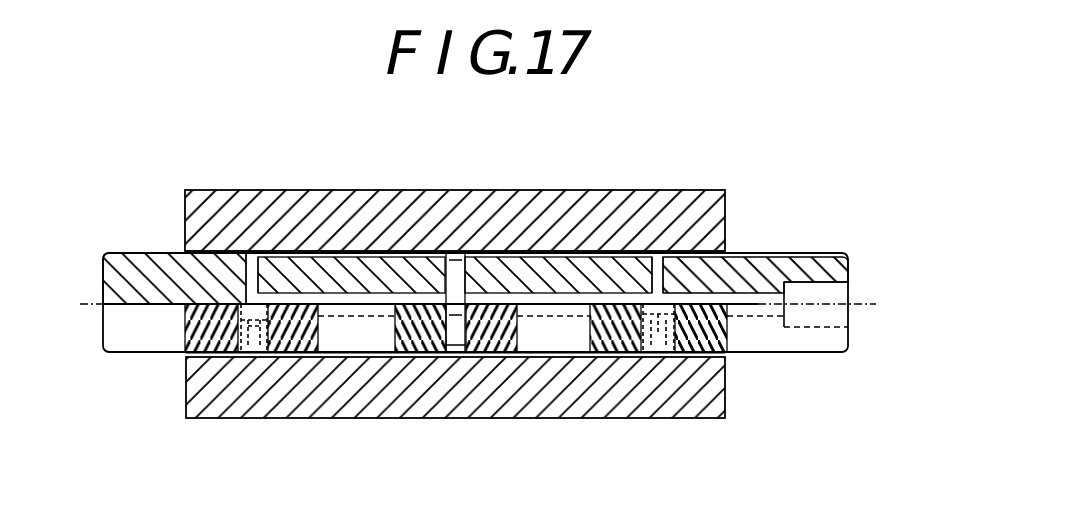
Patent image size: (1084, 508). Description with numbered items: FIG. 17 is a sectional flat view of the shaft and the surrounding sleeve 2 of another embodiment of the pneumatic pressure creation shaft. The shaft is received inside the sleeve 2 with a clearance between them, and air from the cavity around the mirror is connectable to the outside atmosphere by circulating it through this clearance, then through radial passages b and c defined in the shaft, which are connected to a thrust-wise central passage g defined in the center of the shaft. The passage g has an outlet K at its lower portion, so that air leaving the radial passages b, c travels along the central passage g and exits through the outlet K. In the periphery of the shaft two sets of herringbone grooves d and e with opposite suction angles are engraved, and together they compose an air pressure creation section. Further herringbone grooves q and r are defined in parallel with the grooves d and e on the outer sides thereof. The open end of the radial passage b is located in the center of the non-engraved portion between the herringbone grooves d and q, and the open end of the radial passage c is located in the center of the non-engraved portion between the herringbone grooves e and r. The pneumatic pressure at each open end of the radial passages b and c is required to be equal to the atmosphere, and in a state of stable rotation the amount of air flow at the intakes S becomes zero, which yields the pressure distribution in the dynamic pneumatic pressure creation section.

The sleeve 2 is at (413, 207).
The radial passage b is at (252, 263).
The radial passage c is at (657, 263).
The intake S is at (180, 247).
The thrust-wise central passage g is at (761, 304).
The outlet K is at (850, 322).
The herringbone groove q is at (213, 343).
The herringbone grooves d is at (493, 343).
The herringbone grooves e is at (617, 343).
The herringbone groove r is at (699, 343).